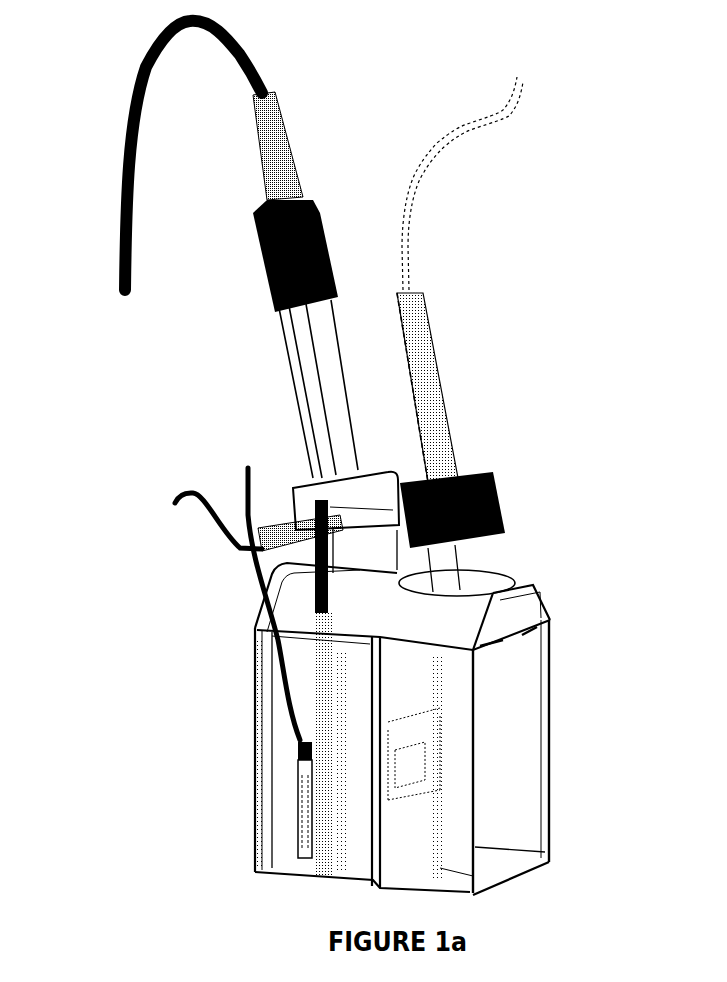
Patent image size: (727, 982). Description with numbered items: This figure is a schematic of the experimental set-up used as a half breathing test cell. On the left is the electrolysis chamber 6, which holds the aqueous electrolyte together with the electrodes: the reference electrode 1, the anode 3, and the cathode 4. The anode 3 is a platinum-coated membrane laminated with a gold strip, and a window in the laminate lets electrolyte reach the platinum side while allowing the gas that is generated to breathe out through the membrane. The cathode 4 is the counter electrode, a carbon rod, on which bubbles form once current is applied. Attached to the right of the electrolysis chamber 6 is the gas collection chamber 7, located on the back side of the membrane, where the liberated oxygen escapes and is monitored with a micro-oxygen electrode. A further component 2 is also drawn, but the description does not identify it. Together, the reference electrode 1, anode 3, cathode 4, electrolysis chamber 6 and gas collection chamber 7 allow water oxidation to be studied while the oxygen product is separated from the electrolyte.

The reference electrode 1 is at (108, 302).
The gas supply tube 2 is at (445, 345).
The anode 3 is at (245, 462).
The cathode 4 is at (168, 509).
The electrolysis chamber 6 is at (287, 750).
The gas collection chamber 7 is at (498, 747).